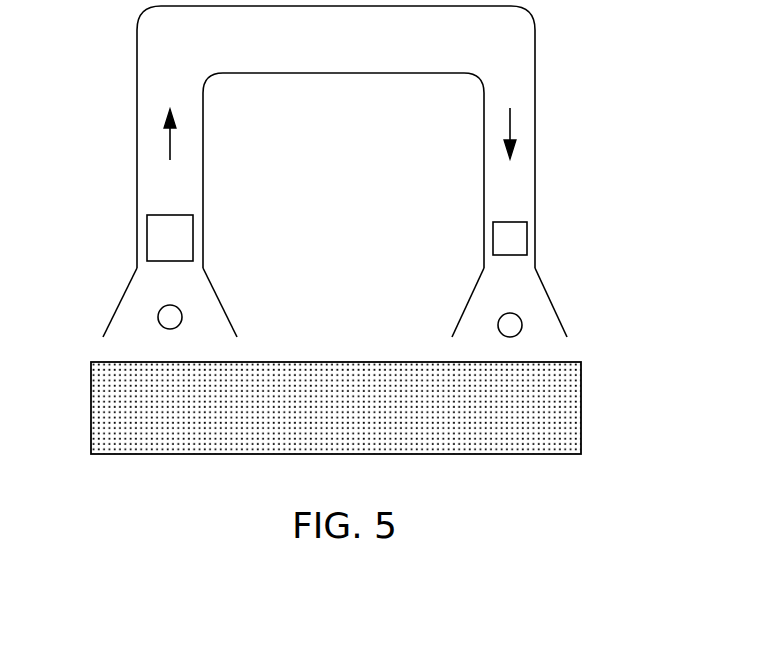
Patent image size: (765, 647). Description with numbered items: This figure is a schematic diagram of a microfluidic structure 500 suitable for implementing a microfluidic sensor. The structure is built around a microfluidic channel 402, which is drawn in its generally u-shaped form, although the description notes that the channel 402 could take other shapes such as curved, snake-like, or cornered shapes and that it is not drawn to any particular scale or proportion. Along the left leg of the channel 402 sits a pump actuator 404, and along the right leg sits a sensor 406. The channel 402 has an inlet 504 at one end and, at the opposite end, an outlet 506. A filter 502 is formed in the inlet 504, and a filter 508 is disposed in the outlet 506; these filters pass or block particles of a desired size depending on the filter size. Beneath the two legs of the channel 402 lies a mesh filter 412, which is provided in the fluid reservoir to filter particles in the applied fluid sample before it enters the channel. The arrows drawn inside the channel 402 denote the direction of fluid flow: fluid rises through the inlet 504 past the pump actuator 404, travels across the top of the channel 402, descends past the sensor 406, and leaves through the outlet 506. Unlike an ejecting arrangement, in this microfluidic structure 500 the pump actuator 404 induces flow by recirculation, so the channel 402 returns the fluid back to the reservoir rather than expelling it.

The microfluidic structure 500 is at (359, 268).
The microfluidic channel 402 is at (317, 73).
The pump actuator 404 is at (193, 238).
The sensor 406 is at (527, 235).
The mesh filter 412 is at (581, 389).
The filter 502 is at (158, 315).
The inlet 504 is at (223, 305).
The outlet 506 is at (470, 300).
The filter 508 is at (522, 325).